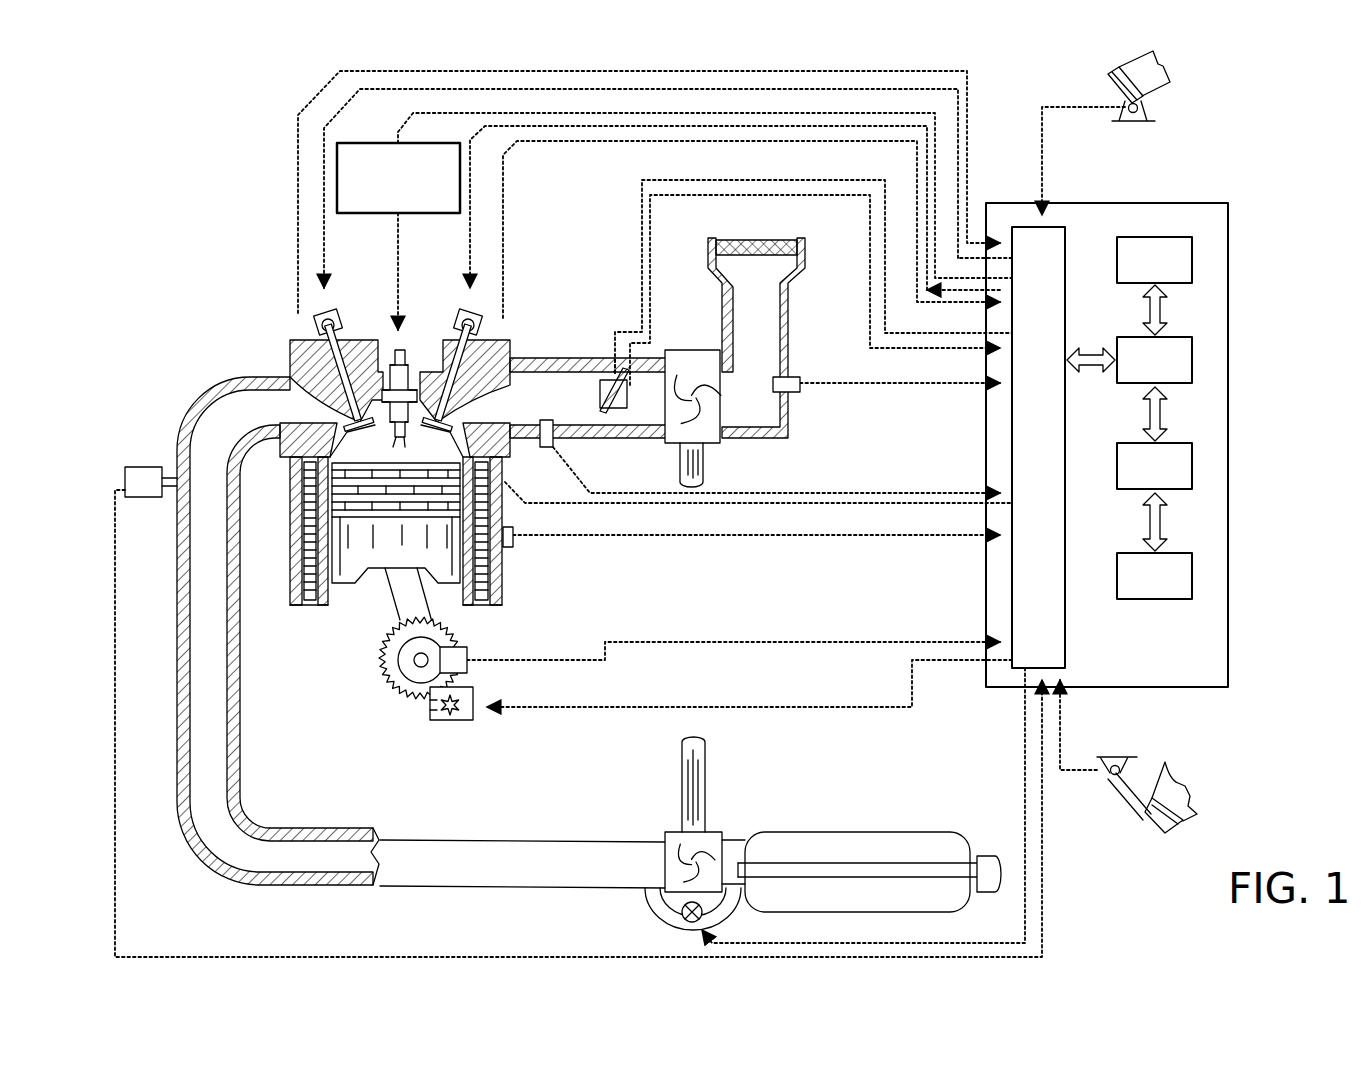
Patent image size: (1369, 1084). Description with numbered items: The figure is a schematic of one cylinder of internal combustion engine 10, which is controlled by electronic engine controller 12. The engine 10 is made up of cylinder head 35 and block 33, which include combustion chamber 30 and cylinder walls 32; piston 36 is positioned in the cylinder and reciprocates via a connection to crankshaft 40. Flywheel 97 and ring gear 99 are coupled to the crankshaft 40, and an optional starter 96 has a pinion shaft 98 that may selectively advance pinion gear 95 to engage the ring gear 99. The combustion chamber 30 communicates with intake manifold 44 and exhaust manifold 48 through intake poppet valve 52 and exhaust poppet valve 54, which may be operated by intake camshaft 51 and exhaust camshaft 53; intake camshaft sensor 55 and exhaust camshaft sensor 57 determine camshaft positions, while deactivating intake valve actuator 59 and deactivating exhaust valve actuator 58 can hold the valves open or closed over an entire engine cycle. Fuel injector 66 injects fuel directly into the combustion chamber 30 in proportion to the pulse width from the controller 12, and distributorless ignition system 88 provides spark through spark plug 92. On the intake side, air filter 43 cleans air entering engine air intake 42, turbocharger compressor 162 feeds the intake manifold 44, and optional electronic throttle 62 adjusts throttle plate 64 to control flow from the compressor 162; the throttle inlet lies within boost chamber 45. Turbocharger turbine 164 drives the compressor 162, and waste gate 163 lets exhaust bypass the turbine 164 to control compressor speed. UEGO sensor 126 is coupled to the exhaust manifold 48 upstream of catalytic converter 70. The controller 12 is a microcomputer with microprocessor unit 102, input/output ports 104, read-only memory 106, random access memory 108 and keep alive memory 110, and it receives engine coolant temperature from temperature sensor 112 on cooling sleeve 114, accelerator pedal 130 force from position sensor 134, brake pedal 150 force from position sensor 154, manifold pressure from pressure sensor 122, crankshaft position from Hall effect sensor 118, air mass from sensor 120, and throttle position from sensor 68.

The internal combustion engine 10 is at (328, 347).
The electronic engine controller 12 is at (1228, 203).
The combustion chamber 30 is at (397, 447).
The cylinder walls 32 is at (401, 564).
The block 33 is at (286, 493).
The cylinder head 35 is at (286, 338).
The piston 36 is at (380, 555).
The crankshaft 40 is at (395, 679).
The engine air intake 42 is at (784, 322).
The air filter 43 is at (773, 255).
The intake manifold 44 is at (533, 409).
The boost chamber 45 is at (599, 396).
The exhaust manifold 48 is at (268, 416).
The intake camshaft 51 is at (464, 286).
The intake poppet valve 52 is at (450, 398).
The exhaust camshaft 53 is at (319, 287).
The exhaust poppet valve 54 is at (300, 398).
The intake camshaft sensor 55 is at (478, 318).
The exhaust camshaft sensor 57 is at (315, 322).
The deactivating exhaust valve actuator 58 is at (343, 325).
The deactivating intake valve actuator 59 is at (460, 332).
The electronic throttle 62 is at (600, 393).
The throttle plate 64 is at (595, 392).
The fuel injector 66 is at (398, 447).
The throttle position sensor 68 is at (633, 380).
The catalytic converter 70 is at (785, 830).
The distributorless ignition system 88 is at (355, 143).
The spark plug 92 is at (406, 345).
The pinion gear 95 is at (455, 722).
The starter 96 is at (449, 728).
The flywheel 97 is at (393, 653).
The pinion shaft 98 is at (447, 720).
The ring gear 99 is at (415, 703).
The microprocessor unit 102 is at (1192, 355).
The input/output ports 104 is at (1067, 233).
The read-only memory 106 is at (1192, 255).
The random access memory 108 is at (1192, 465).
The keep alive memory 110 is at (1192, 575).
The temperature sensor 112 is at (513, 530).
The cooling sleeve 114 is at (490, 553).
The Hall effect sensor 118 is at (470, 648).
The air mass sensor 120 is at (802, 378).
The pressure sensor 122 is at (549, 448).
The Universal Exhaust Gas Oxygen sensor 126 is at (125, 470).
The accelerator pedal 130 is at (1171, 91).
The position sensor 134 is at (1140, 108).
The brake pedal 150 is at (1131, 786).
The position sensor 154 is at (1100, 768).
The turbocharger compressor 162 is at (760, 436).
The waste gate 163 is at (686, 921).
The turbocharger turbine 164 is at (670, 832).